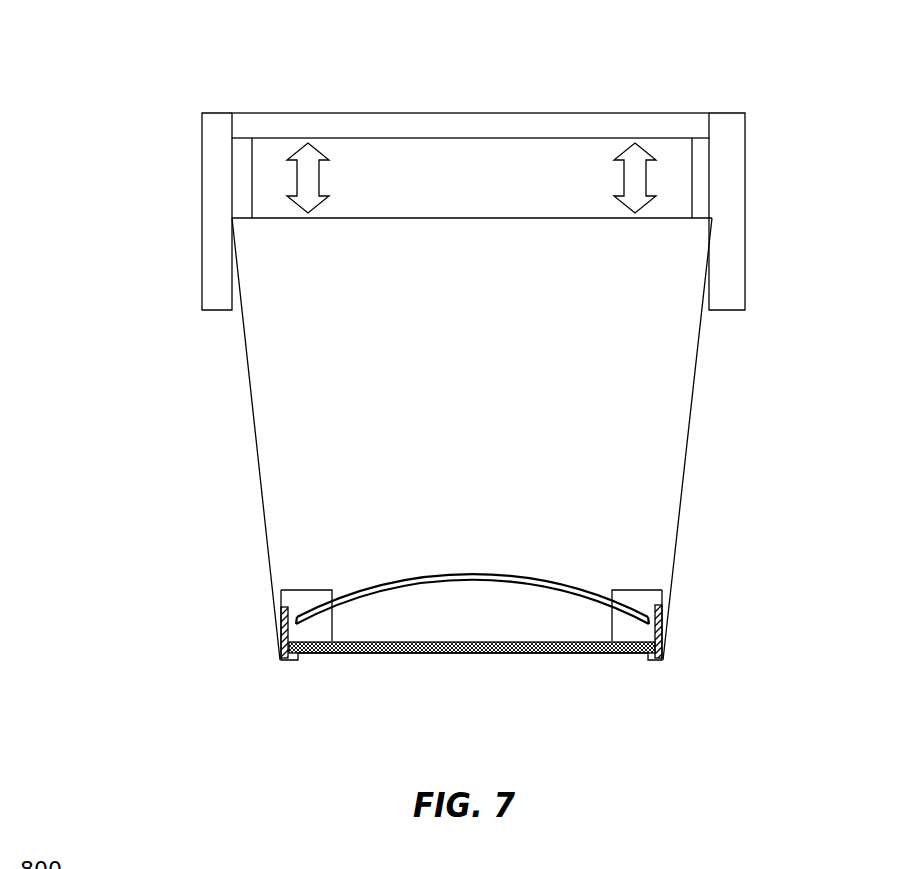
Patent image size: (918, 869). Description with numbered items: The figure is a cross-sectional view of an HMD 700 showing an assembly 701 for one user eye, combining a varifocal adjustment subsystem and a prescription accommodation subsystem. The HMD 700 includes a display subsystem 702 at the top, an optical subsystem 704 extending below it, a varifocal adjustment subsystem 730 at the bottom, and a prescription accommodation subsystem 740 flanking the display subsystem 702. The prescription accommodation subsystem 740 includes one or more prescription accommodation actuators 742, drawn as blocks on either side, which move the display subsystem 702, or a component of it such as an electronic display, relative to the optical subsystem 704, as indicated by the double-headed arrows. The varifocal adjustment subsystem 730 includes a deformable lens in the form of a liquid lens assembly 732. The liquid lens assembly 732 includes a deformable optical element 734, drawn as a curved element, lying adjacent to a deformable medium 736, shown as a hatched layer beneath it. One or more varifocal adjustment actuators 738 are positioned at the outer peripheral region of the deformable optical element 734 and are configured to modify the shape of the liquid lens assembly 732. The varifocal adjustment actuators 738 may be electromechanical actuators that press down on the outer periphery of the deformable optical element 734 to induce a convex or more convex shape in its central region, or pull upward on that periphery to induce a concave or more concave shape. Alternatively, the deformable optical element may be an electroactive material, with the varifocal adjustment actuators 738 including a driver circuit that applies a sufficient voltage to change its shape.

The HMD 700 is at (146, 80).
The assembly 701 is at (382, 86).
The display subsystem 702 is at (480, 123).
The optical subsystem 704 is at (724, 467).
The varifocal adjustment subsystem 730 is at (252, 628).
The liquid lens assembly 732 is at (537, 686).
The deformable optical element 734 is at (472, 573).
The deformable medium 736 is at (443, 617).
The varifocal adjustment actuators 738 is at (307, 590).
The prescription accommodation subsystem 740 is at (150, 236).
The prescription accommodation actuators 742 is at (201, 212).